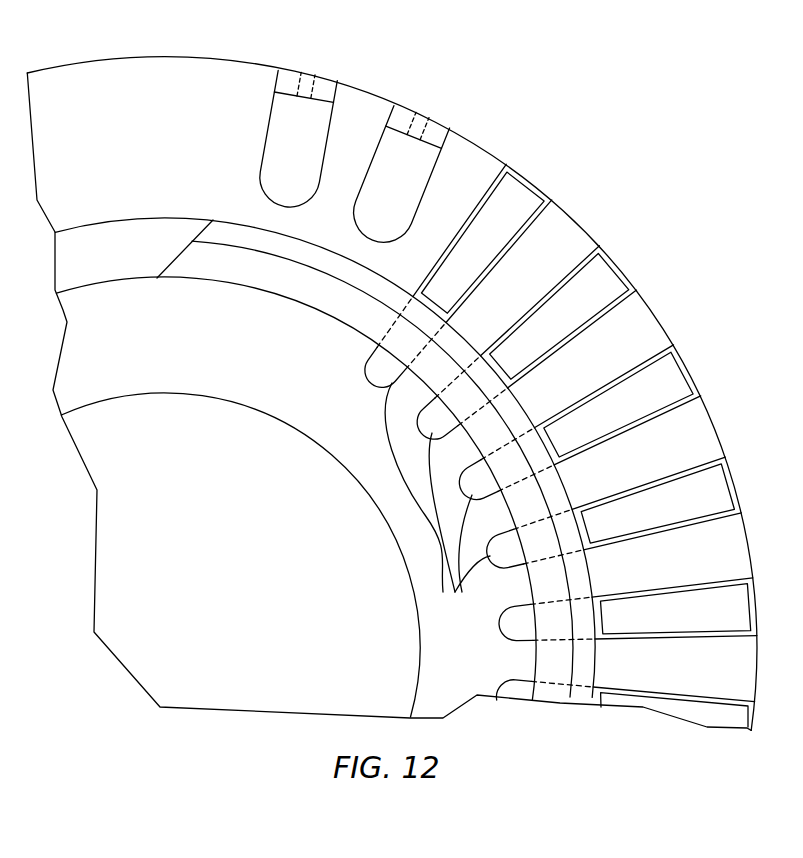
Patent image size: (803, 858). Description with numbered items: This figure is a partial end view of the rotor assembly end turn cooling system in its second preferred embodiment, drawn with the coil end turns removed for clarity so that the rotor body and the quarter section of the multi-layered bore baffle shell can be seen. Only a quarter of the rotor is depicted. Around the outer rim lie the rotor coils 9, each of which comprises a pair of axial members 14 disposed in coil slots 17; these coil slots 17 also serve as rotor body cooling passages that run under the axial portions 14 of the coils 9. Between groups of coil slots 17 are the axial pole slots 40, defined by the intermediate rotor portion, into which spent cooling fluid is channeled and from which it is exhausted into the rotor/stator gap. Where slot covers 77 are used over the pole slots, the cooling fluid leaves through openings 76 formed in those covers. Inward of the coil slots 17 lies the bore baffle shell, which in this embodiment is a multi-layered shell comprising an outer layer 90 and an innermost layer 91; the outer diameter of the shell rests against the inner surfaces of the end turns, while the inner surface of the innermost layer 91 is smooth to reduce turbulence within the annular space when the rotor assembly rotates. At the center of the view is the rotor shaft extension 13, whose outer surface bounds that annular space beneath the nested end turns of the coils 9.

The rotor coil 9 is at (617, 266).
The rotor shaft extension 13 is at (418, 672).
The axial member 14 is at (520, 200).
The coil slot 17 is at (514, 680).
The axial pole slot 40 is at (417, 177).
The opening 76 is at (313, 72).
The slot cover 77 is at (447, 128).
The layer 90 is at (203, 233).
The innermost layer 91 is at (196, 252).